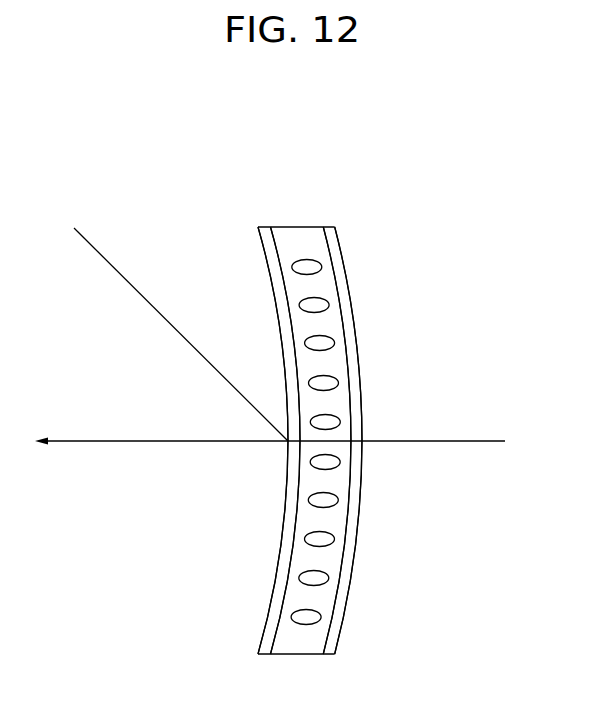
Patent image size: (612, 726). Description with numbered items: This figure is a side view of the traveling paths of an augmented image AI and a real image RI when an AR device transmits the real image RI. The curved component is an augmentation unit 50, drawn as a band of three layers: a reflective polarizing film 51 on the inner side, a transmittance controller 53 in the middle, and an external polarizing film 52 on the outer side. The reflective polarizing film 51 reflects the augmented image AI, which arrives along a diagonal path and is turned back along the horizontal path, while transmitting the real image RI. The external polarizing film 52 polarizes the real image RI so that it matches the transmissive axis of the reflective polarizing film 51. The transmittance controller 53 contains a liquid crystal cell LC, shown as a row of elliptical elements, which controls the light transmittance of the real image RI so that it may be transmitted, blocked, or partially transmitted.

The augmentation unit 50 is at (208, 184).
The reflective polarizing film 51 is at (265, 227).
The transmittance controller 53 is at (294, 227).
The external polarizing film 52 is at (326, 227).
The liquid crystal cell LC is at (322, 344).
The augmented image AI is at (181, 334).
The real image RI is at (138, 450).